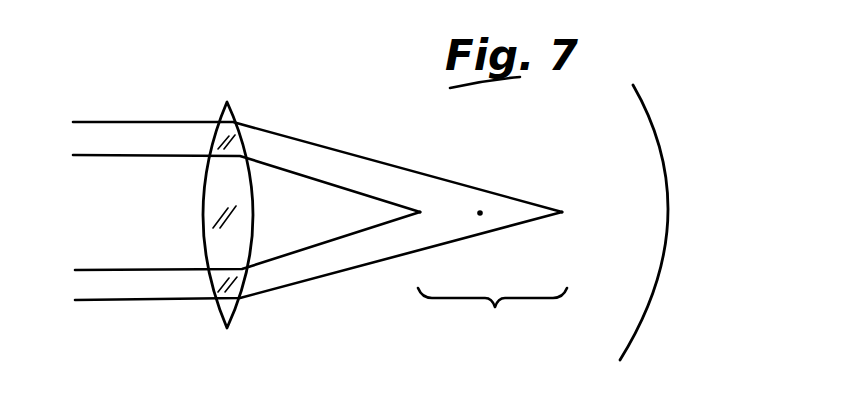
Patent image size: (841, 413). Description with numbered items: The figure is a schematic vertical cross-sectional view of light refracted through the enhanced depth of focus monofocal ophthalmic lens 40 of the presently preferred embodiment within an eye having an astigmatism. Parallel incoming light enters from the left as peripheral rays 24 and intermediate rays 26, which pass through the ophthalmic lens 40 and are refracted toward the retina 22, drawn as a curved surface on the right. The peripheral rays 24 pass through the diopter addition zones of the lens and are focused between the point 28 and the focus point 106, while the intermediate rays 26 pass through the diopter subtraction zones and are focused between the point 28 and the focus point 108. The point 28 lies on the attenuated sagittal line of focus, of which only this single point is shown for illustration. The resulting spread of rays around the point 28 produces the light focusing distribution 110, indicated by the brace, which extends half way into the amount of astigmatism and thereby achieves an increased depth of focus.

The retina 22 is at (644, 322).
The peripheral rays 24 is at (167, 122).
The intermediate rays 26 is at (168, 157).
The point on the sagittal line of focus 28 is at (480, 213).
The ophthalmic lens 40 is at (237, 113).
The focus point 106 is at (420, 212).
The focus point 108 is at (562, 212).
The light focusing distribution 110 is at (492, 317).